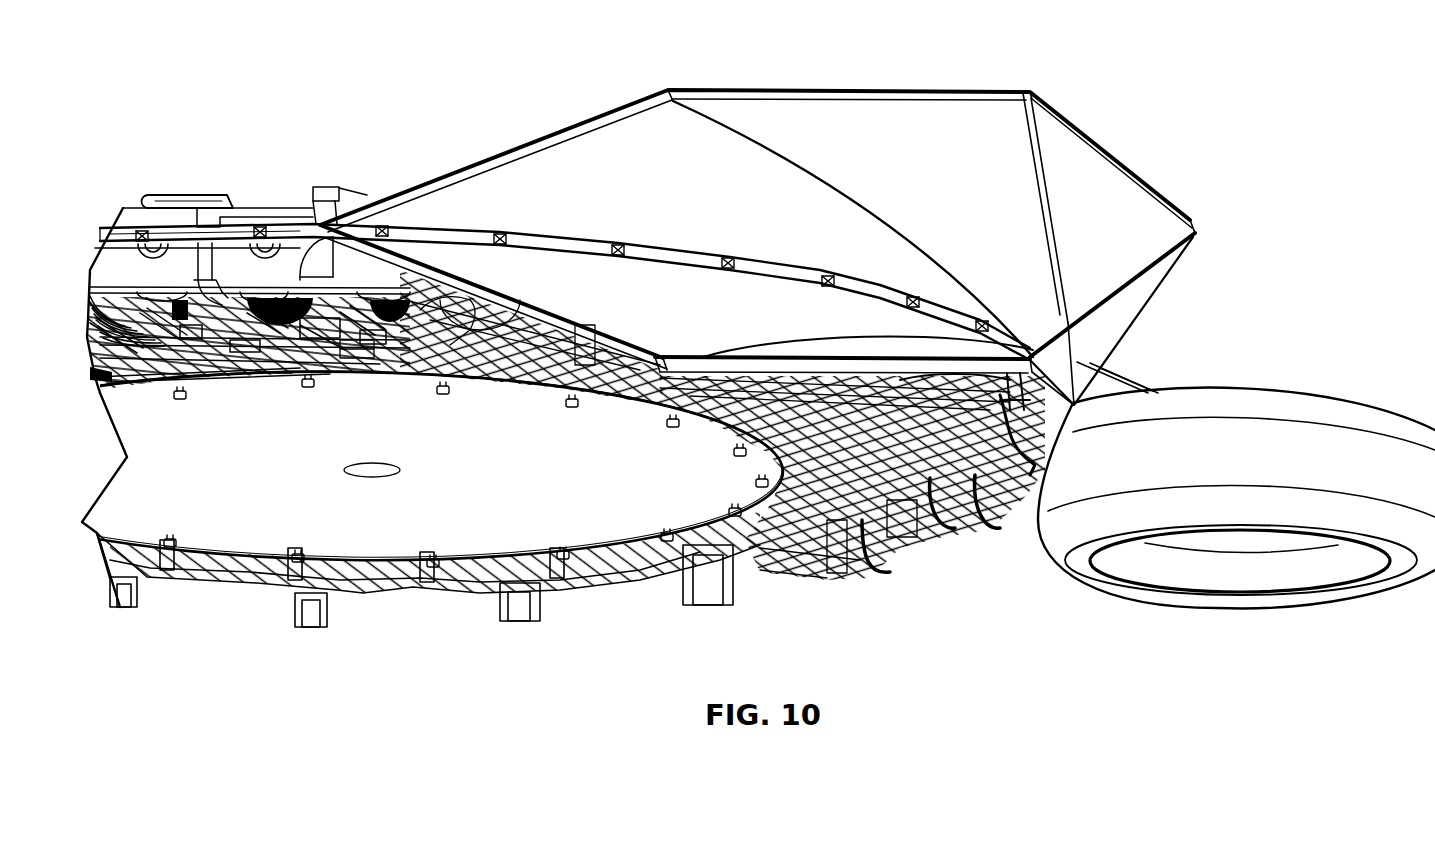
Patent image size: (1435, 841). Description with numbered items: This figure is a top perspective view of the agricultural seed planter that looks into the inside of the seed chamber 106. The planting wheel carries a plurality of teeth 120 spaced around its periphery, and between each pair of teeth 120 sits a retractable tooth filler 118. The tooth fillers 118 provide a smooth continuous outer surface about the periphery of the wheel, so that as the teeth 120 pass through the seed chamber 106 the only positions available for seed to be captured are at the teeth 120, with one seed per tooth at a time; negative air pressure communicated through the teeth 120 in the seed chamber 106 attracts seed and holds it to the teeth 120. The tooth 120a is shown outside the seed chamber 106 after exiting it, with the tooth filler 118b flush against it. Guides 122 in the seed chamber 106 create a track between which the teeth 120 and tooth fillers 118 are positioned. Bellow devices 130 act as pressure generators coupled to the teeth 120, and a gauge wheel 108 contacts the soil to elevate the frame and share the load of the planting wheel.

The seed chamber 106 is at (1088, 167).
The gauge wheel 108 is at (1057, 557).
The retractable tooth filler 118 is at (423, 240).
The tooth filler 118b is at (194, 237).
The teeth 120 is at (260, 212).
The tooth 120a is at (143, 213).
The guide 122 is at (355, 358).
The bellow device 130 is at (281, 377).